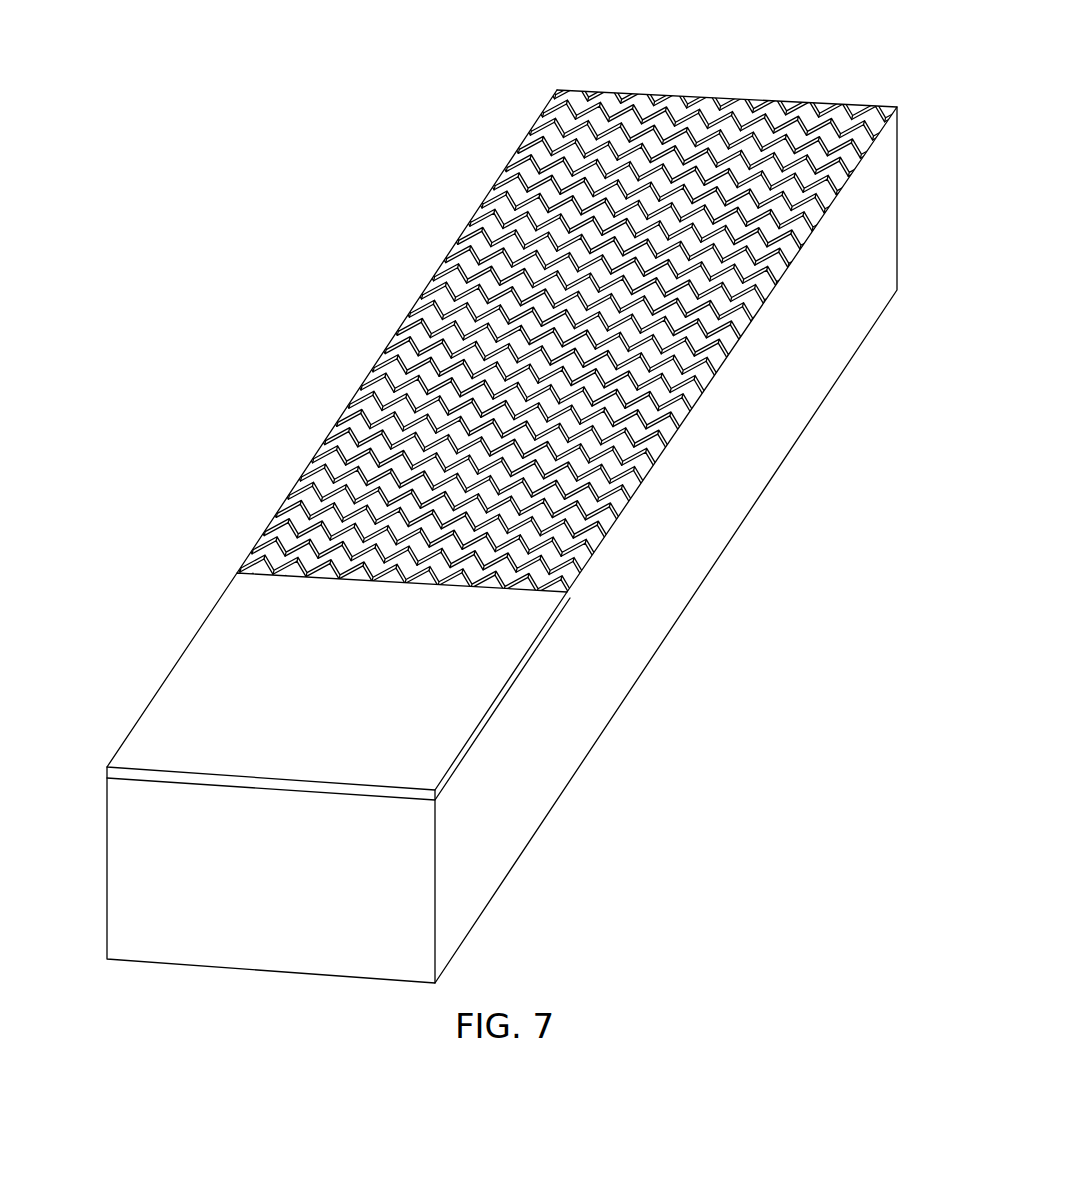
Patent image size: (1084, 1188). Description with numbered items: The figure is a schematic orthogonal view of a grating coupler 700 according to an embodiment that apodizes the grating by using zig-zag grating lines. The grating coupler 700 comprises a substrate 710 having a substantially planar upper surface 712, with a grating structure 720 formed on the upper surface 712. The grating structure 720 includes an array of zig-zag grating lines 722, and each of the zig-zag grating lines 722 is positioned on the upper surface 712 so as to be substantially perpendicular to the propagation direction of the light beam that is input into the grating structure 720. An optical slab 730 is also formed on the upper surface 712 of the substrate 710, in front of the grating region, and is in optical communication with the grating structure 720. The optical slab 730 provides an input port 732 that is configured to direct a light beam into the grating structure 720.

The grating coupler 700 is at (372, 294).
The substrate 710 is at (790, 406).
The upper surface 712 is at (875, 129).
The grating structure 720 is at (407, 358).
The zig-zag grating lines 722 is at (580, 90).
The optical slab 730 is at (188, 668).
The input port 732 is at (128, 778).